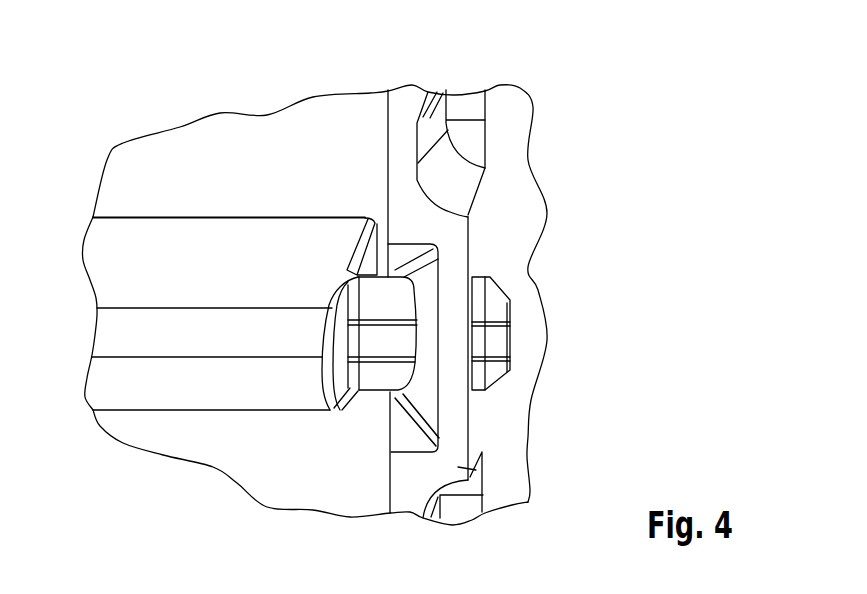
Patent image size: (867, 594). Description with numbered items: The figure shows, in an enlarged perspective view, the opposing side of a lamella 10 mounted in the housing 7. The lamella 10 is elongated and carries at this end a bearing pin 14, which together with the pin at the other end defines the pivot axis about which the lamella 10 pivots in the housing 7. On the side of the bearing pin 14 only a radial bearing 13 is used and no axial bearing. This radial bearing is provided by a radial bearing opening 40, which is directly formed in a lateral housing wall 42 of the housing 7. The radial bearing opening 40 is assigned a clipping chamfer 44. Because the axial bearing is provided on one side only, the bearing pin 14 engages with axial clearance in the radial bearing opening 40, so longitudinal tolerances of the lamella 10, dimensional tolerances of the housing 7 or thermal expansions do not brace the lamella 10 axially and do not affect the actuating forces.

The housing 7 is at (402, 118).
The lamella 10 is at (247, 268).
The radial bearing 13 is at (411, 219).
The bearing pin 14 is at (393, 305).
The radial bearing opening 40 is at (477, 395).
The lateral housing wall 42 is at (483, 472).
The clipping chamfer 44 is at (427, 331).